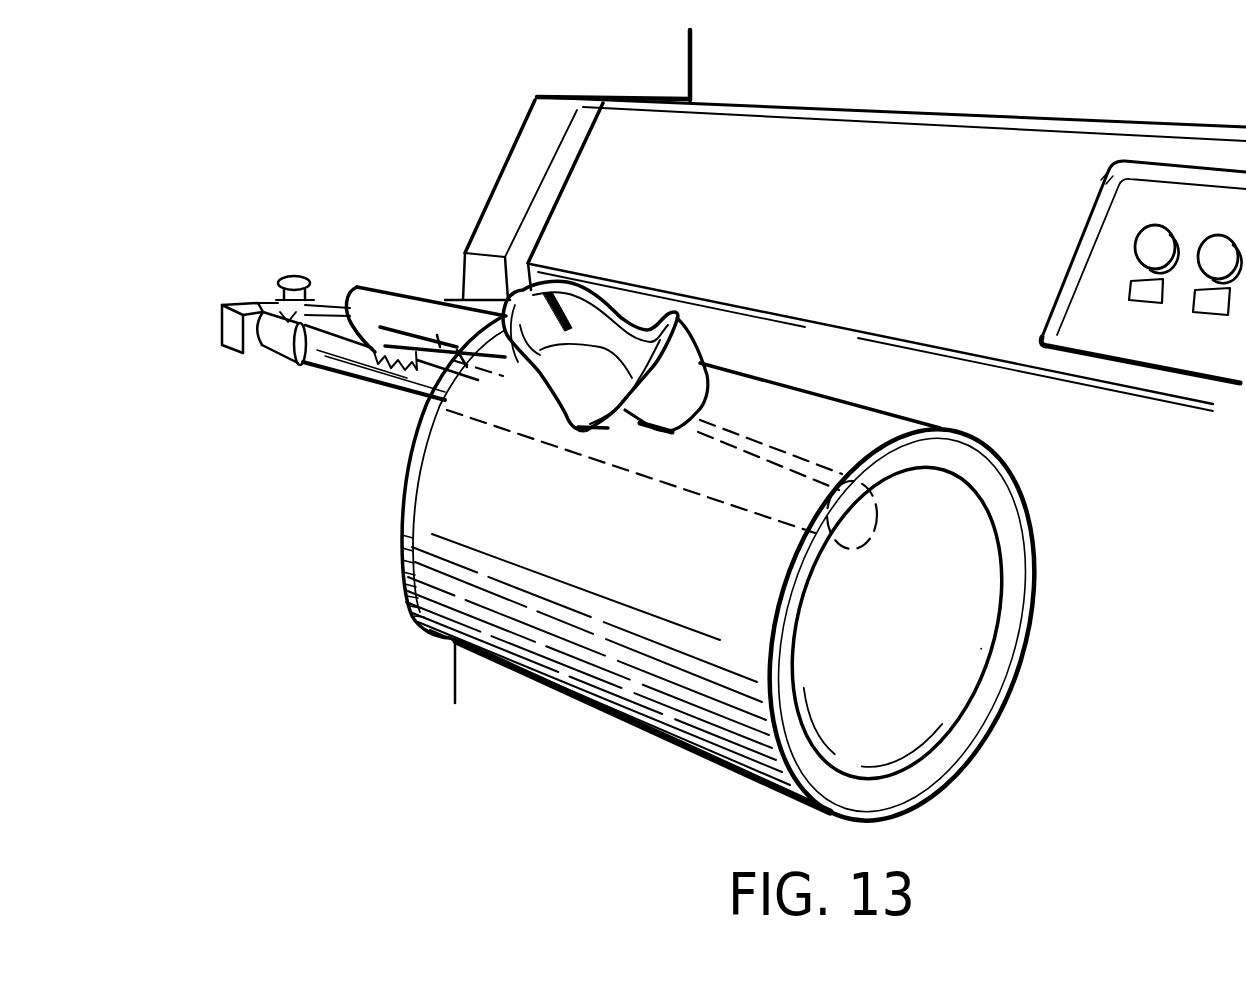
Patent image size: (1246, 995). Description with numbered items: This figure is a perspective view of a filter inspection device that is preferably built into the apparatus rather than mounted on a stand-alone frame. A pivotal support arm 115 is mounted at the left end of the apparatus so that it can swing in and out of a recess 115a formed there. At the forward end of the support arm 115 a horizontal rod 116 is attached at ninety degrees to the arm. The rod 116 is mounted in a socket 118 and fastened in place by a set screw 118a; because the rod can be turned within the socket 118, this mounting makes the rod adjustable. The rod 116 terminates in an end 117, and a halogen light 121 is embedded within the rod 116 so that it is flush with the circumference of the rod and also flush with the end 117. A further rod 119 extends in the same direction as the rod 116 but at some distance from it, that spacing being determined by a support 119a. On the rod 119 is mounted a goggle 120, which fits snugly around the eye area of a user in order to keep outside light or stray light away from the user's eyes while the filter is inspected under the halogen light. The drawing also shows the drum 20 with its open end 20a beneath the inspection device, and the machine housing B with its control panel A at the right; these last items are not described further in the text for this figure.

The drum 20 is at (635, 562).
The drum open end 20a is at (923, 651).
The pivotal support arm 115 is at (453, 300).
The recess 115a is at (563, 178).
The horizontal rod 116 is at (343, 367).
The end of the rod 117 is at (868, 527).
The socket 118 is at (267, 358).
The set screw 118a is at (288, 277).
The further rod 119 is at (403, 368).
The support 119a is at (392, 372).
The goggle 120 is at (505, 357).
The halogen light 121 is at (795, 460).
The control panel A is at (1207, 227).
The machine housing B is at (810, 222).